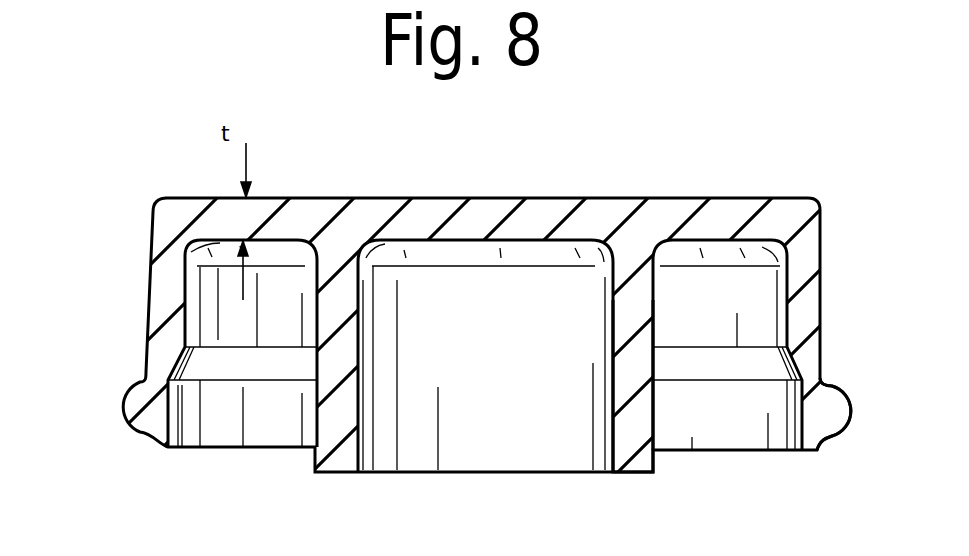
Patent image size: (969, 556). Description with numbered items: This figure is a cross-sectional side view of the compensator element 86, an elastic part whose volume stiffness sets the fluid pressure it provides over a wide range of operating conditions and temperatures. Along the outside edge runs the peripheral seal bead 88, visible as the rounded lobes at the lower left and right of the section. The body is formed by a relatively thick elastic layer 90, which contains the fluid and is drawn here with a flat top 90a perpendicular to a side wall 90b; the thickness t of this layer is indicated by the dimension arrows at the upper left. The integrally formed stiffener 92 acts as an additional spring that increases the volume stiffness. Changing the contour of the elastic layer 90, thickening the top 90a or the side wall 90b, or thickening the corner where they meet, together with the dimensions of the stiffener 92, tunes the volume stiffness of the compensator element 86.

The compensator element 86 is at (812, 187).
The peripheral seal bead 88 is at (843, 405).
The elastic layer 90 is at (432, 213).
The top 90a is at (730, 198).
The side wall 90b is at (150, 297).
The stiffener 92 is at (656, 412).